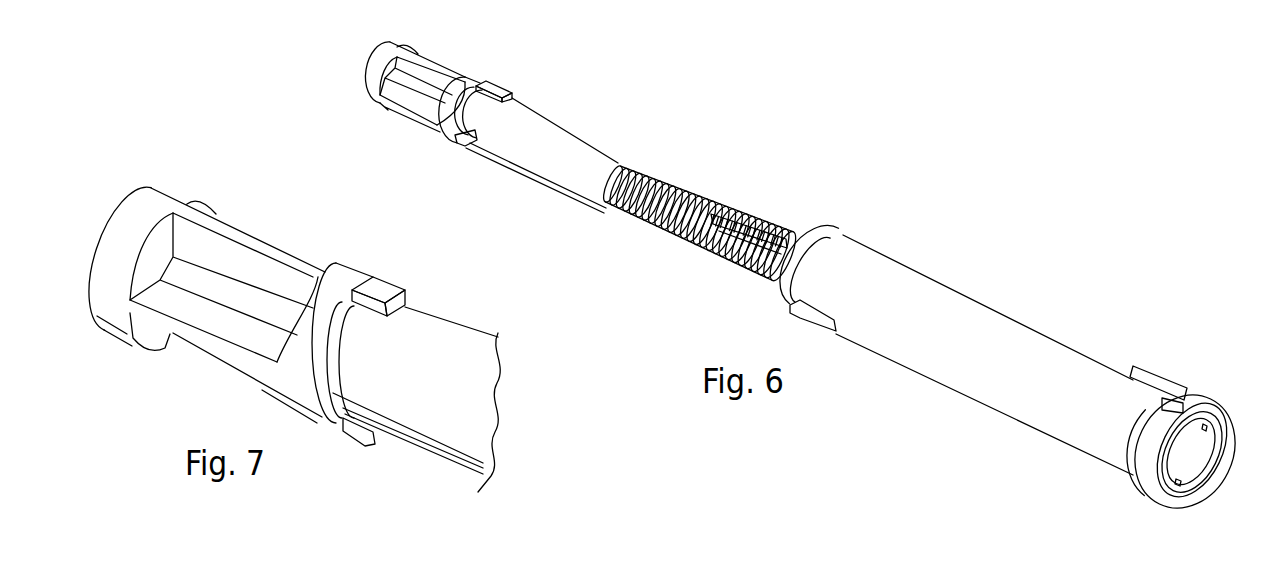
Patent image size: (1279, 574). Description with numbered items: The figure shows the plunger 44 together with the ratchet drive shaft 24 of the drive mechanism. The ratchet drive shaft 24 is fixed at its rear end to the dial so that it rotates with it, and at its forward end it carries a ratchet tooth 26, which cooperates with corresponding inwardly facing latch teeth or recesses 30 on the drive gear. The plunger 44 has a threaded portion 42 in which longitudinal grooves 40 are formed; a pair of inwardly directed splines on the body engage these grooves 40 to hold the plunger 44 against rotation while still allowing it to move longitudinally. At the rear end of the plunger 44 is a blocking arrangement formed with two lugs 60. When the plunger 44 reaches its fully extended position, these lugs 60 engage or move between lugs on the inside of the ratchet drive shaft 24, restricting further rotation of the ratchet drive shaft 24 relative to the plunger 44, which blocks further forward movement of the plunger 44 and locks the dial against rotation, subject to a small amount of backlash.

In FIG. 6, the ratchet drive shaft 24 is at (978, 383).
In FIG. 6, the ratchet tooth 26 is at (1170, 405).
In FIG. 6, the latch teeth or recesses 30 is at (617, 573).
In FIG. 6, the longitudinal grooves 40 is at (697, 250).
In FIG. 6, the threaded portion 42 is at (763, 220).
In FIG. 6, the plunger 44 is at (640, 236).
In FIG. 7, the plunger 44 is at (427, 405).
In FIG. 6, the lugs 60 is at (472, 144).
In FIG. 7, the lugs 60 is at (384, 282).